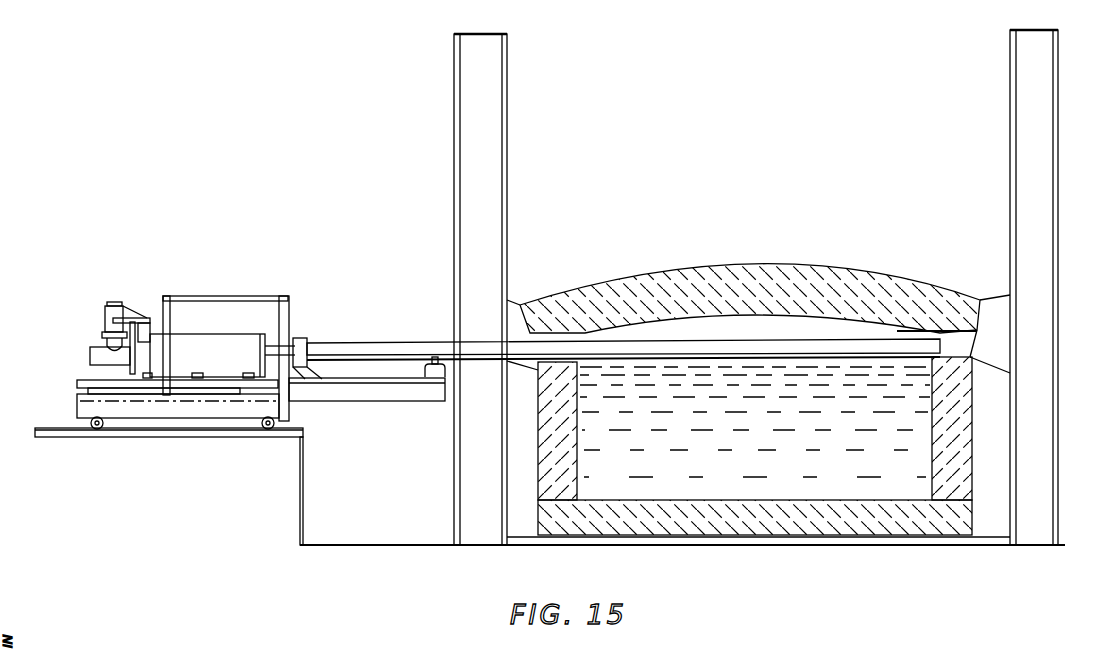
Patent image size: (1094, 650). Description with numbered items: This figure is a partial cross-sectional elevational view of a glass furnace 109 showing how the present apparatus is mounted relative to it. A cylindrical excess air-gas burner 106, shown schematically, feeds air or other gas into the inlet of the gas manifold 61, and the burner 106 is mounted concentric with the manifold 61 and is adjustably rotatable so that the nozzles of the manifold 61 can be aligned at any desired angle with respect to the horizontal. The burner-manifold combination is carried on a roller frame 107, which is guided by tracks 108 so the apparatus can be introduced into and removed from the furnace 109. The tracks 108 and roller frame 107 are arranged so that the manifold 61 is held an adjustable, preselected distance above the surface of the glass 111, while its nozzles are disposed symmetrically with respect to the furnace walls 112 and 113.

The gas manifold 61 is at (380, 341).
The burner 106 is at (220, 352).
The roller frame 107 is at (87, 406).
The tracks 108 is at (57, 428).
The furnace 109 is at (805, 264).
The glass 111 is at (766, 409).
The furnace wall 112 is at (945, 477).
The furnace wall 113 is at (560, 481).